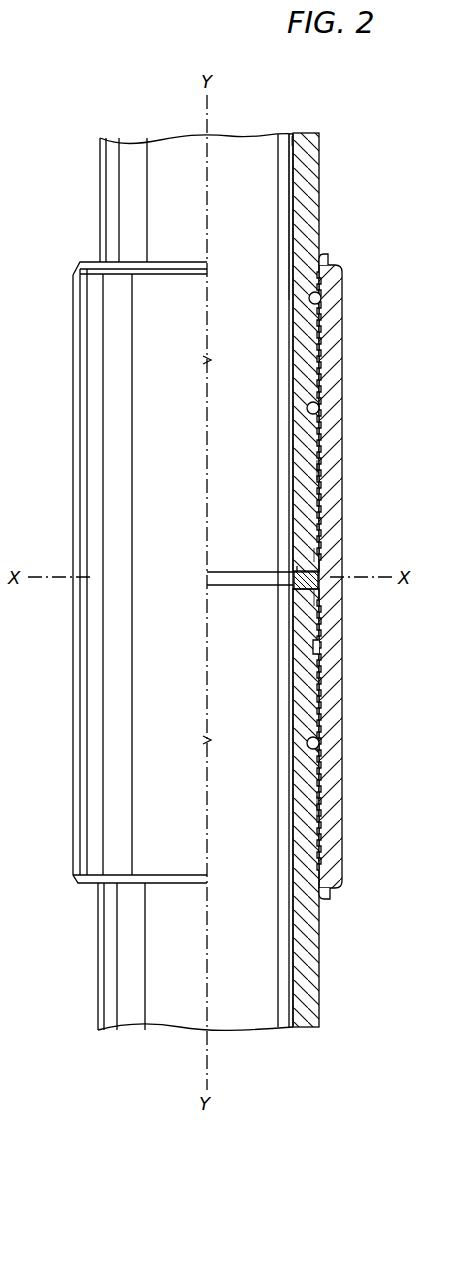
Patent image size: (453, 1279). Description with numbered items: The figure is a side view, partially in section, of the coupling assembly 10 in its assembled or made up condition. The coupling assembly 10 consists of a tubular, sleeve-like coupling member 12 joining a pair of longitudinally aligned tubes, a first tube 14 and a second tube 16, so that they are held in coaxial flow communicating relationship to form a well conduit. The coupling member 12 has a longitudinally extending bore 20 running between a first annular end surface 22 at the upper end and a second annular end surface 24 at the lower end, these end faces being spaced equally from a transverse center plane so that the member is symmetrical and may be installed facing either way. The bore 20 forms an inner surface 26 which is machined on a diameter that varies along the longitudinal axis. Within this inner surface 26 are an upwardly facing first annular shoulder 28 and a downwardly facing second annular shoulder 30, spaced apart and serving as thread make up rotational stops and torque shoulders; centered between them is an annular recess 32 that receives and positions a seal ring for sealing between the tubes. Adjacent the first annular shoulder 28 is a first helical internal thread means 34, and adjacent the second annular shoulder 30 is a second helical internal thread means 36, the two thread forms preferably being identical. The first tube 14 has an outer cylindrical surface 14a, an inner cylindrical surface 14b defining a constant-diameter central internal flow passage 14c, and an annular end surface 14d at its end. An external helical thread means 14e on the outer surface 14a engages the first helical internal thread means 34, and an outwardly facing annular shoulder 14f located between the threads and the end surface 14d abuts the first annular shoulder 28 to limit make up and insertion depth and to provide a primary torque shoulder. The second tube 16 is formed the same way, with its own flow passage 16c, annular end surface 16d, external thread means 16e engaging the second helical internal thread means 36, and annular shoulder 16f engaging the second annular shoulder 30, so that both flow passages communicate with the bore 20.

The coupling assembly 10 is at (62, 455).
The coupling member 12 is at (88, 797).
The first tube 14 is at (308, 207).
The outer cylindrical surface 14a is at (320, 150).
The inner cylindrical surface 14b is at (293, 136).
The central internal flow passage 14c is at (253, 220).
The annular end surface 14d is at (300, 572).
The external helical thread means 14e is at (318, 470).
The outwardly facing annular shoulder 14f is at (313, 556).
The second tube 16 is at (308, 972).
The central internal flow passage 16c is at (244, 835).
The annular end surface 16d is at (300, 590).
The external thread means 16e is at (318, 806).
The outwardly facing annular shoulder 16f is at (318, 600).
The bore 20 is at (241, 420).
The first annular end surface 22 is at (330, 262).
The second annular end surface 24 is at (330, 894).
The inner surface 26 is at (321, 298).
The first annular shoulder 28 is at (328, 347).
The second annular shoulder 30 is at (316, 646).
The annular recess 32 is at (292, 578).
The first helical internal thread means 34 is at (319, 408).
The second helical internal thread means 36 is at (319, 745).